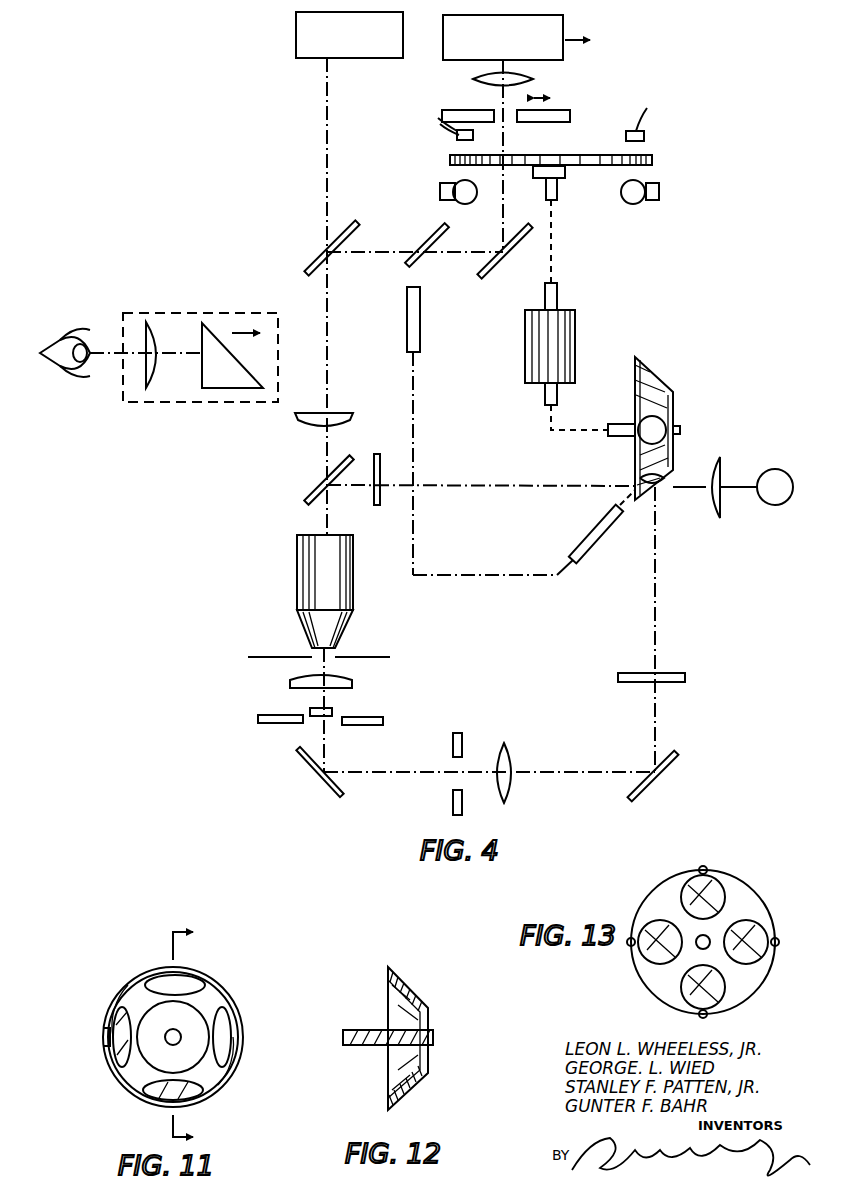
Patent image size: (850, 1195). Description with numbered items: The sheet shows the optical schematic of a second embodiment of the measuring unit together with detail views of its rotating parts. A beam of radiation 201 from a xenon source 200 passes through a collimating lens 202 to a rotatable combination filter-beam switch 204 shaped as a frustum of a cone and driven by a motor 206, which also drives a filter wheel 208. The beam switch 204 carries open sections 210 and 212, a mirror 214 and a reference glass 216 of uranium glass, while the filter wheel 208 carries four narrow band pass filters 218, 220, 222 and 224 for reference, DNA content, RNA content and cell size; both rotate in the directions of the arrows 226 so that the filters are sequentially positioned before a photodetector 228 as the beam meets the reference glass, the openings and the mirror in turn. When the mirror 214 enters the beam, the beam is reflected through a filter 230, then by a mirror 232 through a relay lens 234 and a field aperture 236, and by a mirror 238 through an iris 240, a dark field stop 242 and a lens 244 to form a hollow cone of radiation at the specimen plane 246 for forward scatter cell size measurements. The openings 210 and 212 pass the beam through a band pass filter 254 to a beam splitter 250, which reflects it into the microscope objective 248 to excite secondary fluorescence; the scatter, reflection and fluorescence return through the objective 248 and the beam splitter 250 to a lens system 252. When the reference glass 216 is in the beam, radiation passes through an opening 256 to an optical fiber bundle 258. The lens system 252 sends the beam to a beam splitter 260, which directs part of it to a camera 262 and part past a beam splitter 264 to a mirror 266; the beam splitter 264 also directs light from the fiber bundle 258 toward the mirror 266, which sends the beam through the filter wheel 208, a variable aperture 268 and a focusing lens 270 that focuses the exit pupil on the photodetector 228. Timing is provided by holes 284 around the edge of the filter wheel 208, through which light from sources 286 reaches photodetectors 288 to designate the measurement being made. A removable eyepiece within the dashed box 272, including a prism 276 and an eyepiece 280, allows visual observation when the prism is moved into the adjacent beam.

In FIG. 4, the xenon source 200 is at (780, 477).
In FIG. 4, the beam of radiation 201 is at (691, 492).
In FIG. 4, the collimating lens 202 is at (722, 457).
In FIG. 4, the combination filter-beam switch 204 is at (672, 396).
In FIG. 11, the combination filter-beam switch 204 is at (235, 1000).
In FIG. 12, the combination filter-beam switch 204 is at (428, 1015).
In FIG. 4, the motor 206 is at (578, 330).
In FIG. 4, the filter wheel 208 is at (652, 160).
In FIG. 13, the filter wheel 208 is at (655, 985).
In FIG. 11, the open section 210 is at (190, 985).
In FIG. 12, the open section 210 is at (410, 990).
In FIG. 11, the open section 212 is at (228, 1028).
In FIG. 11, the mirror 214 is at (165, 1095).
In FIG. 12, the mirror 214 is at (405, 1085).
In FIG. 11, the reference glass 216 is at (118, 1017).
In FIG. 13, the narrow band pass filter 218 is at (655, 952).
In FIG. 13, the narrow band pass filter 220 is at (713, 895).
In FIG. 13, the narrow band pass filter 222 is at (756, 935).
In FIG. 13, the narrow band pass filter 224 is at (720, 995).
In FIG. 11, the arrows 226 is at (100, 983).
In FIG. 13, the arrows 226 is at (622, 900).
In FIG. 4, the photodetector 228 is at (563, 29).
In FIG. 4, the filter 230 is at (668, 673).
In FIG. 4, the mirror 232 is at (655, 783).
In FIG. 4, the relay lens 234 is at (512, 762).
In FIG. 4, the field aperture 236 is at (463, 735).
In FIG. 4, the mirror 238 is at (318, 775).
In FIG. 4, the iris 240 is at (265, 725).
In FIG. 4, the dark field stop 242 is at (335, 710).
In FIG. 4, the lens 244 is at (345, 677).
In FIG. 4, the specimen plane 246 is at (255, 657).
In FIG. 4, the microscope objective 248 is at (297, 585).
In FIG. 4, the beam splitter 250 is at (306, 495).
In FIG. 4, the lens system 252 is at (300, 427).
In FIG. 4, the band pass filter 254 is at (381, 490).
In FIG. 11, the opening 256 is at (113, 1043).
In FIG. 4, the optical fiber bundle 258 is at (407, 330).
In FIG. 4, the beam splitter 260 is at (322, 254).
In FIG. 4, the camera 262 is at (296, 43).
In FIG. 4, the beam splitter 264 is at (437, 232).
In FIG. 4, the mirror 266 is at (497, 262).
In FIG. 4, the variable aperture 268 is at (568, 110).
In FIG. 4, the focusing lens 270 is at (476, 79).
In FIG. 4, the dashed box 272 is at (155, 313).
In FIG. 4, the prism 276 is at (235, 365).
In FIG. 4, the eyepiece 280 is at (150, 395).
In FIG. 13, the holes 284 is at (707, 866).
In FIG. 4, the light sources 286 is at (455, 202).
In FIG. 4, the photodetectors 288 is at (457, 135).